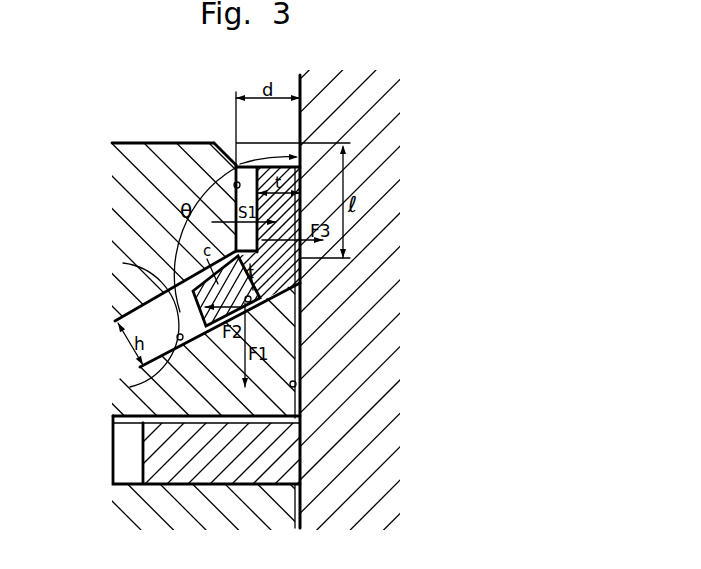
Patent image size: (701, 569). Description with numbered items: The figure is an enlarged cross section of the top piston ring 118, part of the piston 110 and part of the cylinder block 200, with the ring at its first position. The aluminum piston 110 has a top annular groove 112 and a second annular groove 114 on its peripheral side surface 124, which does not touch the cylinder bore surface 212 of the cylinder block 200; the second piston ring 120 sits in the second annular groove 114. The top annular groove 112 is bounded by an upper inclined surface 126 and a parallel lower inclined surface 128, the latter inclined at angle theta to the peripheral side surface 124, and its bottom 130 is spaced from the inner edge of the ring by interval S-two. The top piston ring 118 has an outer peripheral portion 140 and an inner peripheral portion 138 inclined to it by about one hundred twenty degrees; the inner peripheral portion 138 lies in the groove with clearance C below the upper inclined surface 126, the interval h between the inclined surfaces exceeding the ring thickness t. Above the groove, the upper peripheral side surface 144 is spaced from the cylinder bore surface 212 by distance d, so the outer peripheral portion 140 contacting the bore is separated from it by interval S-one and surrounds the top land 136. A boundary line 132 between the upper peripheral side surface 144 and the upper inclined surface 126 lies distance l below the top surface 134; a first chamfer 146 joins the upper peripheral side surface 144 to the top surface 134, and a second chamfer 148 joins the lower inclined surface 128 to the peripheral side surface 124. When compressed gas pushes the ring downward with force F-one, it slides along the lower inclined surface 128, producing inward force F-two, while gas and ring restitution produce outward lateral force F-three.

The piston 110 is at (117, 139).
The top annular groove 112 is at (152, 301).
The second annular groove 114 is at (118, 458).
The top piston ring 118 is at (305, 277).
The second piston ring 120 is at (292, 447).
The peripheral side surface 124 is at (296, 386).
The upper inclined surface 126 is at (168, 250).
The lower inclined surface 128 is at (298, 381).
The bottom 130 is at (138, 416).
The boundary line 132 is at (304, 262).
The top surface 134 is at (142, 142).
The top land 136 is at (197, 155).
The inner peripheral portion 138 is at (155, 263).
The outer peripheral portion 140 is at (304, 165).
The upper peripheral side surface 144 is at (234, 188).
The first chamfer 146 is at (234, 150).
The second chamfer 148 is at (308, 312).
The cylinder block 200 is at (318, 512).
The cylinder bore surface 212 is at (303, 396).